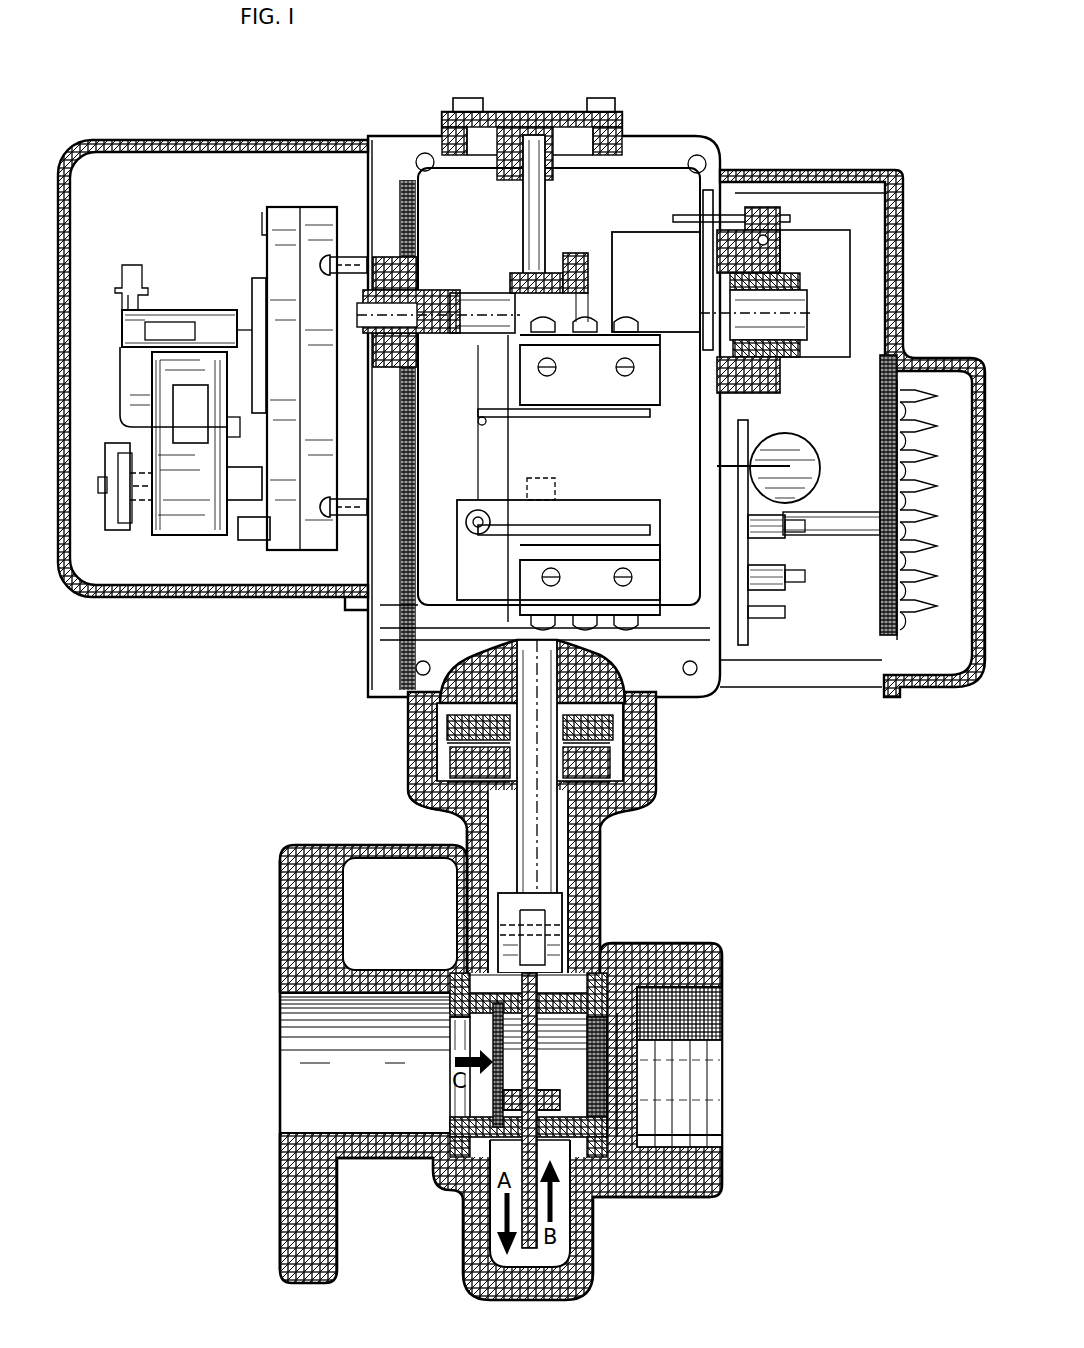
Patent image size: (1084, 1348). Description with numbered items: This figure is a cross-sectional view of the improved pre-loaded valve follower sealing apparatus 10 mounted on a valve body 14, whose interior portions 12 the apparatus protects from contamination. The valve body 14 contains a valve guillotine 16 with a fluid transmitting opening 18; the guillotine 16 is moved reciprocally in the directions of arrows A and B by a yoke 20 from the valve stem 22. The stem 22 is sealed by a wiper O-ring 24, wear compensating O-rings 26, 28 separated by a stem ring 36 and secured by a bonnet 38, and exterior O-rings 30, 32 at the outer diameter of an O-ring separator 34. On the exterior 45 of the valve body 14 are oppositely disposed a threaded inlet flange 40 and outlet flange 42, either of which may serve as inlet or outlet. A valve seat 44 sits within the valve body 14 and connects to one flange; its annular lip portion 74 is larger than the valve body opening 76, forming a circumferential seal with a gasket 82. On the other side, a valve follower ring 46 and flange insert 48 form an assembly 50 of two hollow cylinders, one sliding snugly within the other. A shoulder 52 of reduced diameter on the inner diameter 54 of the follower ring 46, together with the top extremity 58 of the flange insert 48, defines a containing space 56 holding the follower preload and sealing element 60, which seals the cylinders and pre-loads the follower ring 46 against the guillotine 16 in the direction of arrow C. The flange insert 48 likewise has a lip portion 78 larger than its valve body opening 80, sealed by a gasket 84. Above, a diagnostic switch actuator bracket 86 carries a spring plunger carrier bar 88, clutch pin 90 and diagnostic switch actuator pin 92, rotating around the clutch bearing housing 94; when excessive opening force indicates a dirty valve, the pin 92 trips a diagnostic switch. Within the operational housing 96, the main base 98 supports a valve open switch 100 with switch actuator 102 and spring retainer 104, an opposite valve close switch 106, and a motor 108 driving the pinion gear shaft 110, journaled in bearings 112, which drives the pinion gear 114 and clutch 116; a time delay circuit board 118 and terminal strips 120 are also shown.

The pre-loaded valve follower sealing apparatus 10 is at (668, 895).
The interior portions 12 is at (575, 830).
The valve body 14 is at (590, 857).
The valve guillotine 16 is at (530, 1245).
The fluid transmitting opening 18 is at (717, 1028).
The yoke 20 is at (552, 920).
The valve stem 22 is at (540, 805).
The wiper O-ring 24 is at (468, 830).
The wear compensating O-ring 26 is at (460, 723).
The wear compensating O-ring 28 is at (440, 693).
The exterior O-ring 30 is at (430, 807).
The exterior O-ring 32 is at (412, 780).
The O-ring separator 34 is at (590, 758).
The stem ring 36 is at (575, 665).
The bonnet 38 is at (410, 758).
The inlet flange 40 is at (712, 1163).
The outlet flange 42 is at (290, 1183).
The valve seat 44 is at (677, 943).
The exterior 45 is at (597, 1207).
The valve follower ring 46 is at (445, 1192).
The flange insert 48 is at (387, 1153).
The assembly 50 is at (470, 1097).
The shoulder 52 is at (513, 1088).
The inner diameter 54 is at (583, 1060).
The follower preload and sealing element containing space 56 is at (510, 1108).
The top extremity 58 is at (450, 1035).
The follower preload and sealing element 60 is at (493, 1045).
The annular-shaped lip portion 74 is at (635, 968).
The valve body opening 76 is at (717, 1131).
The annular-shaped lip portion 78 is at (430, 1160).
The valve body opening 80 is at (462, 968).
The gasket 82 is at (598, 960).
The gasket 84 is at (475, 1005).
The diagnostic switch actuator bracket 86 is at (783, 243).
The spring plunger carrier bar 88 is at (765, 240).
The clutch pin 90 is at (710, 220).
The diagnostic switch actuator pin 92 is at (713, 300).
The clutch bearing housing 94 is at (747, 390).
The operational housing 96 is at (157, 140).
The main base 98 is at (398, 640).
The valve open switch 100 is at (535, 580).
The switch actuator 102 is at (470, 512).
The spring retainer 104 is at (598, 500).
The valve close switch 106 is at (547, 392).
The motor 108 is at (205, 315).
The pinion gear shaft 110 is at (480, 298).
The bearings 112 is at (418, 285).
The pinion gear 114 is at (540, 290).
The clutch 116 is at (632, 238).
The time delay circuit board 118 is at (752, 595).
The terminal strips 120 is at (900, 530).